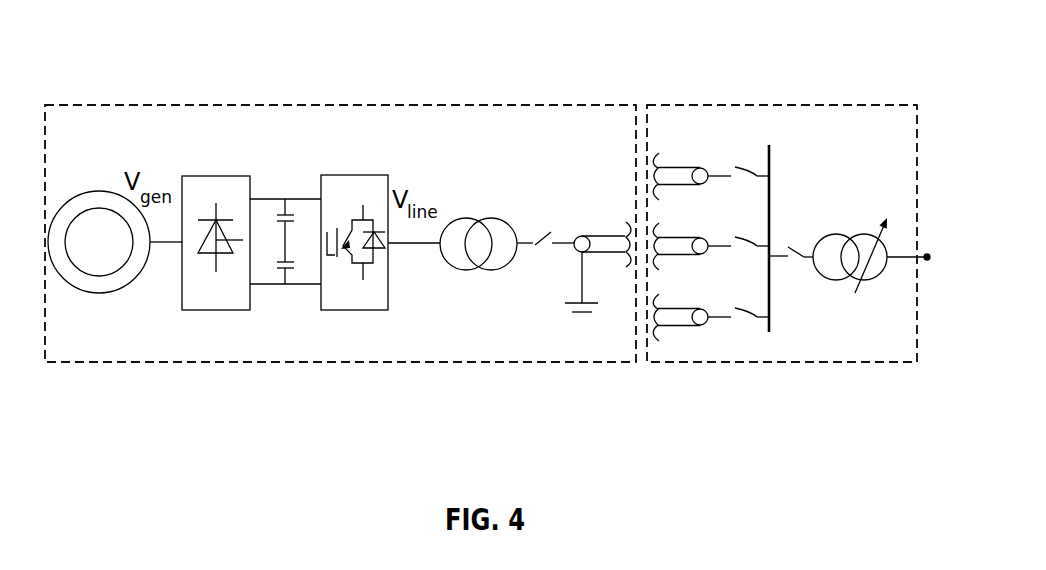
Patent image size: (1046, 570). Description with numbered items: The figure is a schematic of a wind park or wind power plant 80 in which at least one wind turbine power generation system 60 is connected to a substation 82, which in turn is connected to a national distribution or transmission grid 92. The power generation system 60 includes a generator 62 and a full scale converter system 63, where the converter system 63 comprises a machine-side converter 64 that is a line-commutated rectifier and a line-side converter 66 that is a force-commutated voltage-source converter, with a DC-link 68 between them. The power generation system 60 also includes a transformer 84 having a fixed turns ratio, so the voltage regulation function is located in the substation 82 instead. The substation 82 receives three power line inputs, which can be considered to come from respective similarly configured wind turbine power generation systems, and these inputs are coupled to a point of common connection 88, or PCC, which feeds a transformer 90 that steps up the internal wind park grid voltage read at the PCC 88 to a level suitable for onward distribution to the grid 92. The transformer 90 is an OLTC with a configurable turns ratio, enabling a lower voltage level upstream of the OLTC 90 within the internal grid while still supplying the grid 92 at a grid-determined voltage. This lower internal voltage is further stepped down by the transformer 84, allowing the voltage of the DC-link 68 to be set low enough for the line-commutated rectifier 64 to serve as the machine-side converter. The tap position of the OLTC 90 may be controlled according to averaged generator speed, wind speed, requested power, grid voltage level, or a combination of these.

The wind turbine power generation system 60 is at (266, 394).
The generator 62 is at (99, 294).
The full scale converter system 63 is at (285, 196).
The machine-side converter 64 is at (214, 311).
The line-side converter 66 is at (355, 311).
The DC-link 68 is at (285, 286).
The wind park 80 is at (724, 61).
The substation 82 is at (797, 397).
The transformer 84 is at (480, 214).
The point of common connection 88 is at (772, 155).
The transformer 90 is at (862, 289).
The national distribution or transmission grid 92 is at (928, 256).